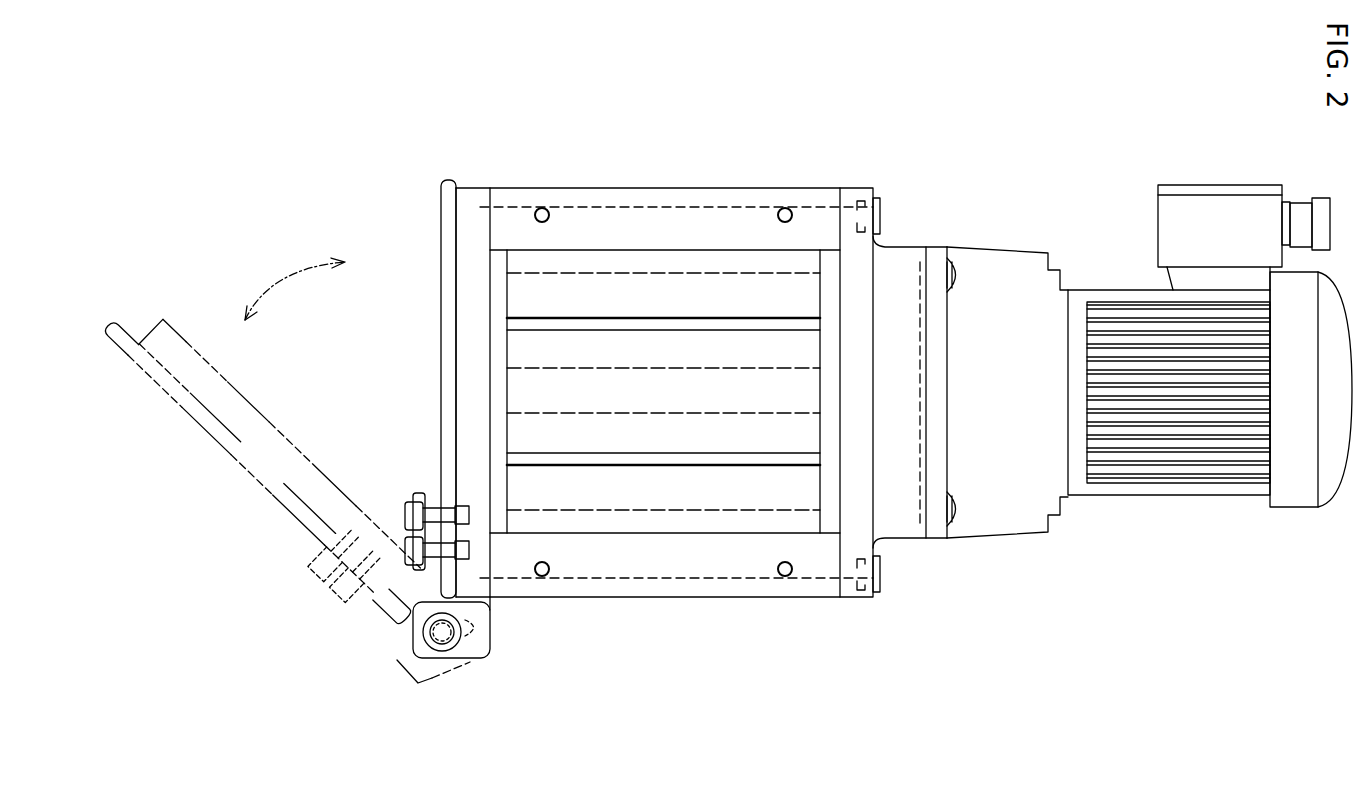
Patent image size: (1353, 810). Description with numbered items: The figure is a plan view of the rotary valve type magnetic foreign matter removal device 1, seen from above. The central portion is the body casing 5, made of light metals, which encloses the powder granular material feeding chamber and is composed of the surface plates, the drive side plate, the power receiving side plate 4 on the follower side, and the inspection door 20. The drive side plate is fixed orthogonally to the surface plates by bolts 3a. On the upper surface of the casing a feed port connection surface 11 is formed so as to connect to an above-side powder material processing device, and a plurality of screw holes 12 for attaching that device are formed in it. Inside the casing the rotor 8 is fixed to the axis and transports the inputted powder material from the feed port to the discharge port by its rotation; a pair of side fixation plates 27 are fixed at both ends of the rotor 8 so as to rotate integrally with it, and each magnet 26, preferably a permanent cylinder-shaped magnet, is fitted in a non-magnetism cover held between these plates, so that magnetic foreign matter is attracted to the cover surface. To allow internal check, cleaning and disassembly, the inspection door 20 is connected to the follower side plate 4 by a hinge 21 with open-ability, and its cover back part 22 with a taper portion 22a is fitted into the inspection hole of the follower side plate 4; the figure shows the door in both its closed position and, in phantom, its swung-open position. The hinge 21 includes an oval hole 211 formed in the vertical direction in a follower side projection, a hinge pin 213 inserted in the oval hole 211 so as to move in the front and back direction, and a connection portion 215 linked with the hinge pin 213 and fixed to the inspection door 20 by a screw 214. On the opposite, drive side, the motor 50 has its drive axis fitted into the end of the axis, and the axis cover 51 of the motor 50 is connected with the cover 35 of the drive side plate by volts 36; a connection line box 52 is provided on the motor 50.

The rotary valve type magnetic foreign matter removal device 1 is at (1022, 179).
The bolts 3a is at (880, 213).
The power receiving side plate 4 is at (470, 212).
The body casing 5 is at (864, 171).
The rotor 8 is at (620, 462).
The feed port connection surface 11 is at (656, 213).
The screw holes 12 is at (542, 207).
The inspection door 20 is at (447, 270).
The hinge 21 is at (492, 679).
The cover back part 22 is at (250, 437).
The taper portion 22a is at (150, 330).
The magnet 26 is at (733, 392).
The side fixation plate 27 is at (503, 262).
The cover 35 is at (897, 262).
The volts 36 is at (962, 275).
The motor 50 is at (1172, 490).
The axis cover 51 is at (1035, 518).
The connection line box 52 is at (1172, 229).
The oval hole 211 is at (500, 659).
The hinge pin 213 is at (443, 636).
The screw 214 is at (412, 498).
The connection portion 215 is at (395, 636).